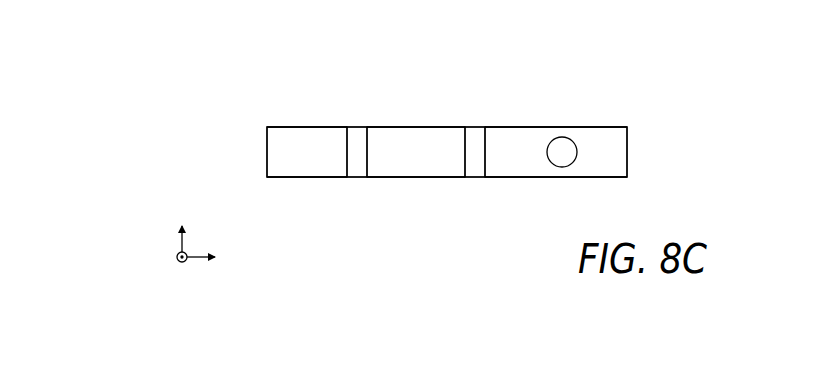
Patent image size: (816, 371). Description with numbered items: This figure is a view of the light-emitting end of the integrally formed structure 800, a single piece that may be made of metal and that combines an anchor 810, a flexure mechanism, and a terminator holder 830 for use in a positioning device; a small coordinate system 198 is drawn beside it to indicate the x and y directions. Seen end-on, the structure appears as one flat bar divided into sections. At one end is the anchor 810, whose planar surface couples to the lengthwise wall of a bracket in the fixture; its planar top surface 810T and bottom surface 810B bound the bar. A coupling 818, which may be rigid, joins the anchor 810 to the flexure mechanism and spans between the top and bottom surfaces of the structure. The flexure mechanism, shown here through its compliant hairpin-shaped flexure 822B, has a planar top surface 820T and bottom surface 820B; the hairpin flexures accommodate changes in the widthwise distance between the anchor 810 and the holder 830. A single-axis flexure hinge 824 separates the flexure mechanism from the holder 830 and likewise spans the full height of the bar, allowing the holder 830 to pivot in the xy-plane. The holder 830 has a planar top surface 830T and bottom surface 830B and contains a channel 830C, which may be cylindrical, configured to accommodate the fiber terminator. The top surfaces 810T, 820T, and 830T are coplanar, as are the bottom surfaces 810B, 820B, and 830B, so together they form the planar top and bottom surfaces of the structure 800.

The integrally formed structure 800 is at (206, 38).
The coordinate system 198 is at (155, 241).
The anchor 810 is at (307, 152).
The top surface of anchor 810T is at (298, 125).
The bottom surface of anchor 810B is at (298, 179).
The coupling 818 is at (355, 126).
The compliant hairpin-shaped flexure 822B is at (416, 152).
The top surface of flexure mechanism 820T is at (408, 125).
The bottom surface of flexure mechanism 820B is at (408, 179).
The single-axis flexure hinge 824 is at (472, 126).
The terminator holder 830 is at (556, 152).
The top surface of holder 830T is at (530, 125).
The bottom surface of holder 830B is at (530, 179).
The channel 830C is at (562, 150).